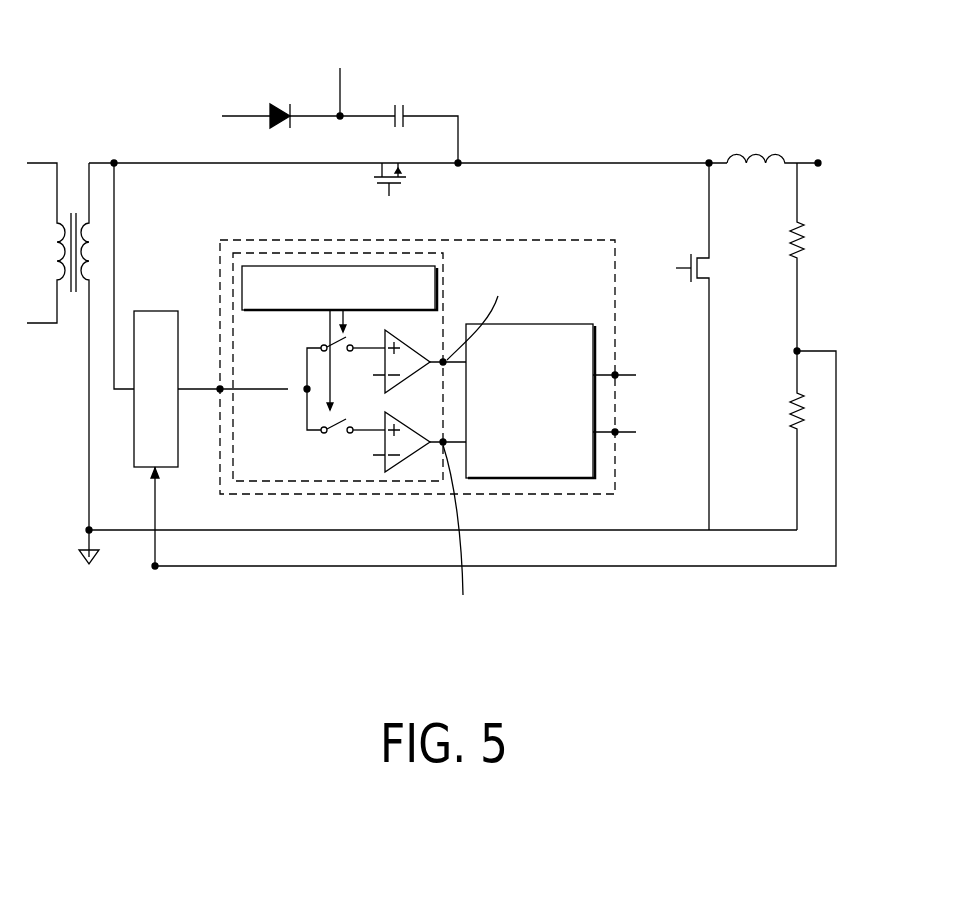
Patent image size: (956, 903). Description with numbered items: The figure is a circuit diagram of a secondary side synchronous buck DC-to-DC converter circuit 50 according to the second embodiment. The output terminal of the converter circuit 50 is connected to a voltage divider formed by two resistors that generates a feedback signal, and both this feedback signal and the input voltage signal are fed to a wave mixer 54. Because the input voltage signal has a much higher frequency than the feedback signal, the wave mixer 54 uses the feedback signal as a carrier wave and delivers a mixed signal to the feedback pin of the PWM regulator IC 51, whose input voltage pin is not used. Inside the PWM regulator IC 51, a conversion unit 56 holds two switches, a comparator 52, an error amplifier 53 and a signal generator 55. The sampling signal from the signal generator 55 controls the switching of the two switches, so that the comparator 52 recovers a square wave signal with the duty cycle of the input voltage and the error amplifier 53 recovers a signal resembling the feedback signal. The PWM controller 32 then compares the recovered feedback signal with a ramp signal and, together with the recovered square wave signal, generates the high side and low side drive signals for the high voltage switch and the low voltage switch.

The synchronous buck DC-to-DC converter circuit 50 is at (59, 32).
The PWM regulator IC 51 is at (330, 494).
The comparator 52 is at (445, 358).
The error amplifier 53 is at (428, 443).
The wave mixer 54 is at (154, 311).
The signal generator 55 is at (294, 266).
The conversion unit 56 is at (282, 481).
The PWM controller 32 is at (530, 480).